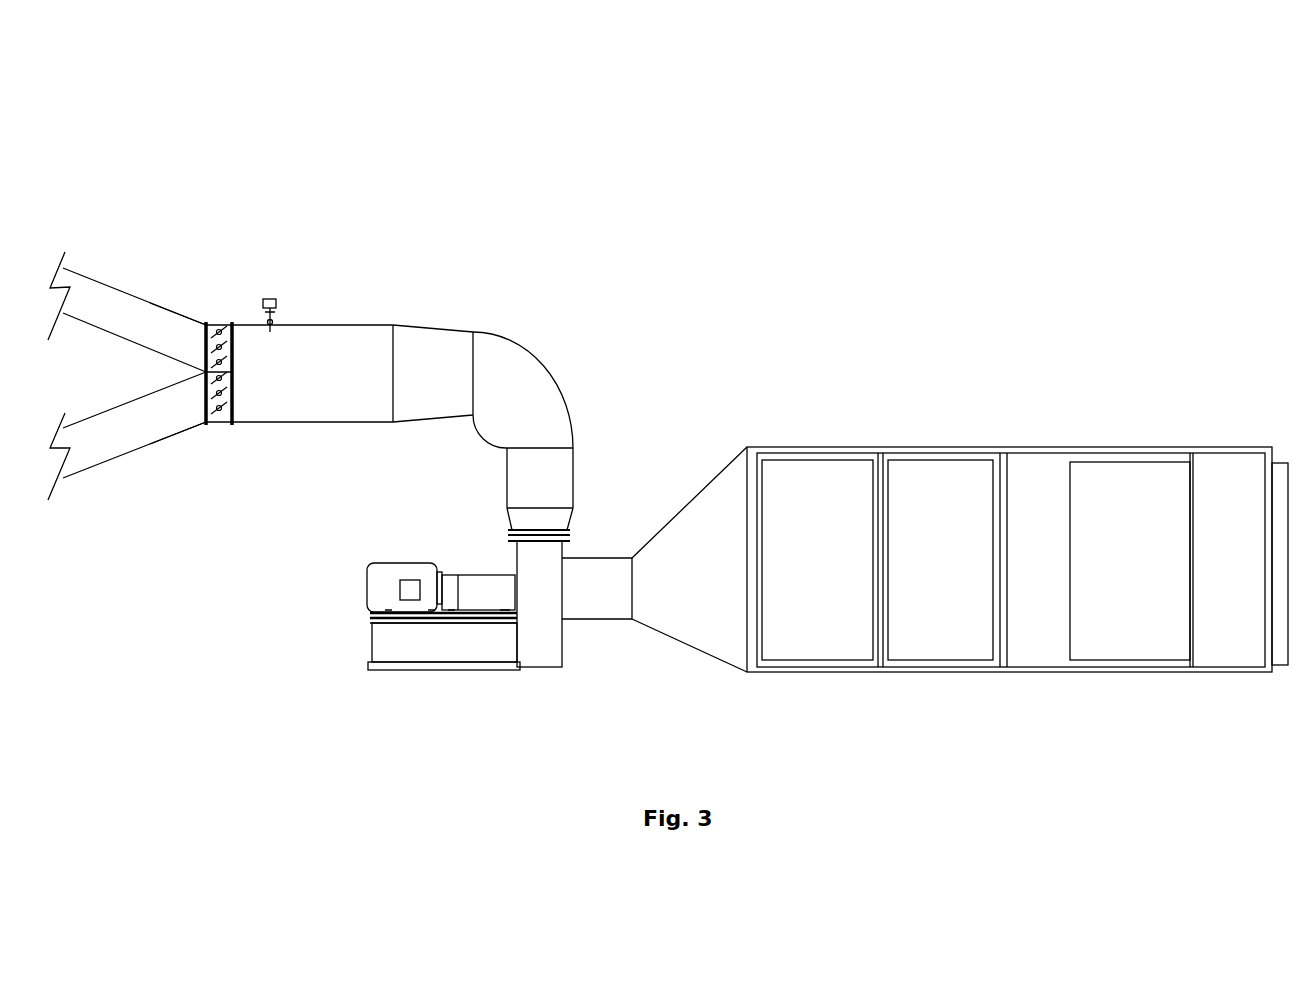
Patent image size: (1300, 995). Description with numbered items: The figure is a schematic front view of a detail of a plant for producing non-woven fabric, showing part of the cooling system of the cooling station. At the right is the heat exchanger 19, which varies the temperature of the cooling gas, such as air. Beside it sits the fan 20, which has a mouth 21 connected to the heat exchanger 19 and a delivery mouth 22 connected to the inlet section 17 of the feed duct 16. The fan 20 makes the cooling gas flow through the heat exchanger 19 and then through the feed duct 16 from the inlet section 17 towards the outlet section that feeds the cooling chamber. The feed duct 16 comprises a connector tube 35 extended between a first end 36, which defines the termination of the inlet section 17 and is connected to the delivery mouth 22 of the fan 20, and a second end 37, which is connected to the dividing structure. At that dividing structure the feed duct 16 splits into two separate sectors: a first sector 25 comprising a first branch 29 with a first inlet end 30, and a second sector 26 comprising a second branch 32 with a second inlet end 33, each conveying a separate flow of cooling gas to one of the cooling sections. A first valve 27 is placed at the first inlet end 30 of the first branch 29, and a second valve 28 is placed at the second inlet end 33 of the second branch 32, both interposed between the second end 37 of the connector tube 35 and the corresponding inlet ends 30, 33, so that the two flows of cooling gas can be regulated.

The feed duct 16 is at (243, 157).
The inlet section 17 is at (543, 297).
The heat exchanger 19 is at (1025, 413).
The fan 20 is at (447, 690).
The mouth 21 is at (597, 598).
The delivery mouth 22 is at (558, 520).
The first sector 25 is at (93, 255).
The second sector 26 is at (90, 482).
The first valve 27 is at (213, 320).
The second valve 28 is at (222, 415).
The first branch 29 is at (100, 305).
The first inlet end 30 is at (192, 326).
The second branch 32 is at (132, 425).
The second inlet end 33 is at (206, 405).
The connector tube 35 is at (433, 348).
The first end 36 is at (538, 505).
The second end 37 is at (236, 402).